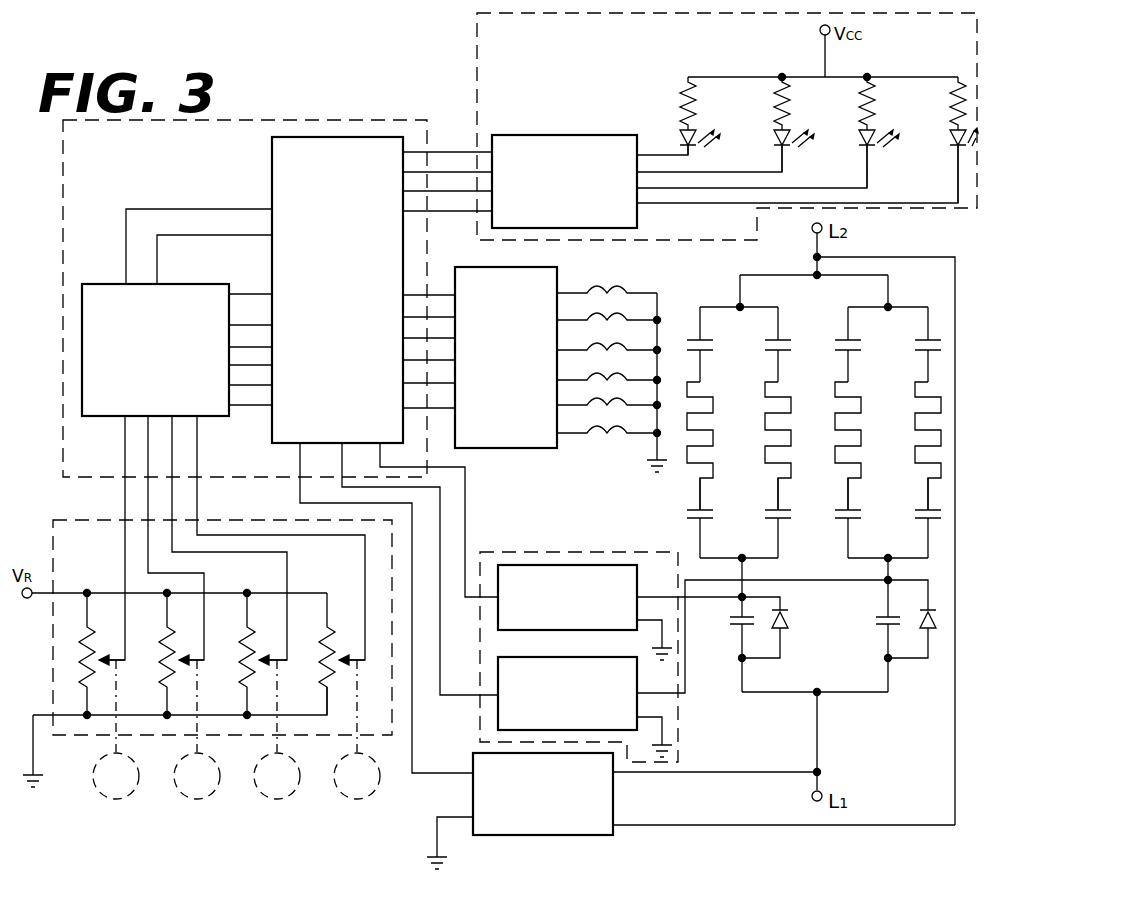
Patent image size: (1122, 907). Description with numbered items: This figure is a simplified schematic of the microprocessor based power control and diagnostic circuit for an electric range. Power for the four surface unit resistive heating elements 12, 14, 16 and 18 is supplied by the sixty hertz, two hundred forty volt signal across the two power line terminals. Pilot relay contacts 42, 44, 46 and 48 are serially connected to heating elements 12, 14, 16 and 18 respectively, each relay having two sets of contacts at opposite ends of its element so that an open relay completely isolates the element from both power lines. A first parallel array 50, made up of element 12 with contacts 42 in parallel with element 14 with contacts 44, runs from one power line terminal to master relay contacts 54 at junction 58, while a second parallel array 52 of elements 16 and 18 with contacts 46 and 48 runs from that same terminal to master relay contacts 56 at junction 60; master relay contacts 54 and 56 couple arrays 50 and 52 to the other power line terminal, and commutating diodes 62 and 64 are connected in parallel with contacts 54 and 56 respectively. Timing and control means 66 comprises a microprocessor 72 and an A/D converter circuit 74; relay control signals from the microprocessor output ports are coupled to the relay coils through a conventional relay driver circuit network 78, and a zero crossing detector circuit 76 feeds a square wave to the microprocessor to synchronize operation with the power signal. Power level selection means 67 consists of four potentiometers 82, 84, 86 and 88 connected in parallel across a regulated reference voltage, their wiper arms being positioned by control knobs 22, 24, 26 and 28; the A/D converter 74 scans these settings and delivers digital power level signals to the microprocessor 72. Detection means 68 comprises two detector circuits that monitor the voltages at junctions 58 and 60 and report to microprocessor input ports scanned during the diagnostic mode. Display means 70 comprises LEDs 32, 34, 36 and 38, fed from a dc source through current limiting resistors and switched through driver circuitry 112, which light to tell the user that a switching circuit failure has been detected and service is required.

The surface unit resistive heating element 12 is at (722, 392).
The surface unit resistive heating element 14 is at (800, 392).
The surface unit resistive heating element 16 is at (862, 412).
The surface unit resistive heating element 18 is at (918, 436).
The rotary control knob 22 is at (96, 793).
The rotary control knob 24 is at (222, 790).
The rotary control knob 26 is at (258, 788).
The rotary control knob 28 is at (338, 772).
The indicator light LED 32 is at (680, 140).
The indicator light LED 34 is at (774, 140).
The indicator light LED 36 is at (859, 142).
The indicator light LED 38 is at (950, 142).
The pilot relay contacts 42 is at (700, 340).
The pilot relay contacts 44 is at (779, 340).
The pilot relay contacts 46 is at (848, 340).
The pilot relay contacts 48 is at (926, 350).
The first parallel array of pilot relay contacts and surface units 50 is at (747, 439).
The second parallel array of pilot relay contacts and surface units 52 is at (888, 446).
The master relay contacts 54 is at (735, 626).
The master relay contacts 56 is at (884, 626).
The junction 58 is at (740, 597).
The junction 60 is at (886, 582).
The commutating diode 62 is at (786, 620).
The commutating diode 64 is at (920, 620).
The timing and control means 66 is at (300, 120).
The power level selection means 67 is at (148, 737).
The detection means 68 is at (595, 552).
The display means 70 is at (477, 94).
The microprocessor 72 is at (300, 137).
The A/D converter circuit 74 is at (172, 284).
The zero crossing detector circuit 76 is at (613, 815).
The relay driver circuit network 78 is at (520, 448).
The potentiometer 82 is at (80, 655).
The potentiometer 84 is at (160, 660).
The potentiometer 86 is at (240, 664).
The potentiometer 88 is at (320, 654).
The driver circuitry 112 is at (530, 135).